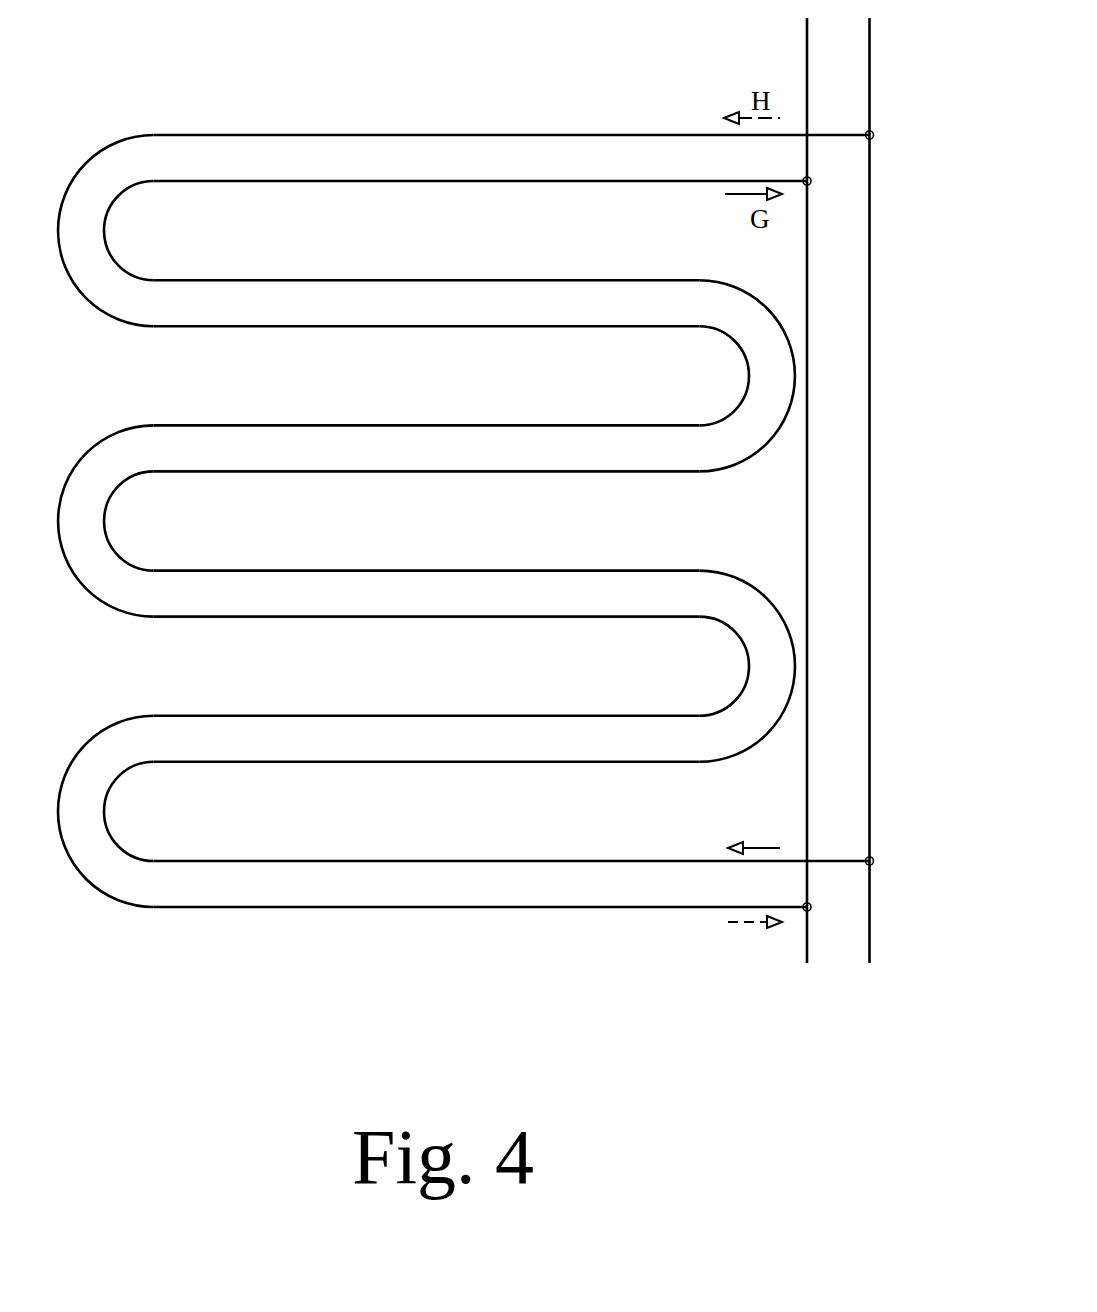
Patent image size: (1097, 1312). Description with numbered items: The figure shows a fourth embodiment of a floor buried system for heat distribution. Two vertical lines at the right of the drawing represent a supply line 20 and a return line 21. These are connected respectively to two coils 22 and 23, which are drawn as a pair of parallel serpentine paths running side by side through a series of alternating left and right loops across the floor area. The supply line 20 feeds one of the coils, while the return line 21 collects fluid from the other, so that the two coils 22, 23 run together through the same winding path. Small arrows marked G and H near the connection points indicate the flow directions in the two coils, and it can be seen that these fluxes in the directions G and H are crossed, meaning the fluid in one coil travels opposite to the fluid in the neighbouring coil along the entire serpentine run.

The supply line 20 is at (871, 197).
The return line 21 is at (807, 506).
The coil 22 is at (405, 907).
The coil 23 is at (462, 860).